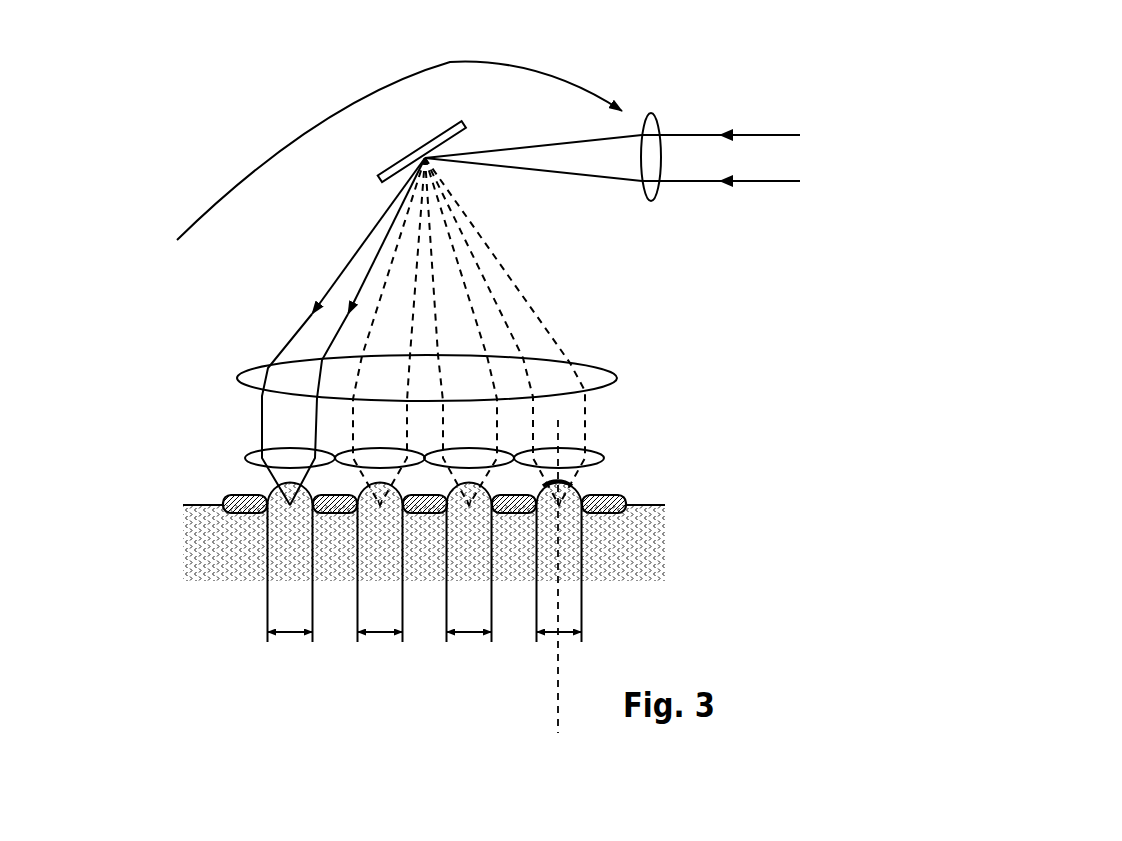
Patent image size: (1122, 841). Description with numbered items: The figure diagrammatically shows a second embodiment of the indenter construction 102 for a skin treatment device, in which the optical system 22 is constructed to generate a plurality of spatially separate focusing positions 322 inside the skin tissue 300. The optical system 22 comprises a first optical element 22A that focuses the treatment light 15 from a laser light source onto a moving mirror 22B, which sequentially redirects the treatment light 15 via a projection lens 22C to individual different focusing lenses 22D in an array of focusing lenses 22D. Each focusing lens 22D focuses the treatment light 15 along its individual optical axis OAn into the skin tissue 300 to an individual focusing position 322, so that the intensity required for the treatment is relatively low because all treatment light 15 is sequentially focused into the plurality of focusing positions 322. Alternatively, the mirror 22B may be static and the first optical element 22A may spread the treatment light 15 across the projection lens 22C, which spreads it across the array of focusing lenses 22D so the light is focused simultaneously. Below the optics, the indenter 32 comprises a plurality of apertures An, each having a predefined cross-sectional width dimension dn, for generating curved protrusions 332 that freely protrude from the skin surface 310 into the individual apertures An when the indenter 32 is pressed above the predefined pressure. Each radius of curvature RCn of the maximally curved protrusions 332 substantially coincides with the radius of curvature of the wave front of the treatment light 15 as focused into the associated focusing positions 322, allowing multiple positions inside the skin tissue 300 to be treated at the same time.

The indenter construction 102 is at (618, 47).
The optical system 22 is at (360, 191).
The first optical element 22A is at (652, 190).
The moving mirror 22B is at (443, 127).
The projection lens 22C is at (596, 377).
The focusing lenses 22D is at (280, 457).
The treatment light 15 is at (592, 179).
The skin tissue 300 is at (645, 553).
The skin surface 310 is at (657, 497).
The curved protrusions 332 is at (355, 486).
The indenter 32 is at (617, 496).
The focusing positions 322 is at (547, 505).
The radius of curvature RCn is at (574, 487).
The individual optical axis OAn is at (574, 596).
The apertures An is at (560, 633).
The cross-sectional width dimension dn is at (380, 633).